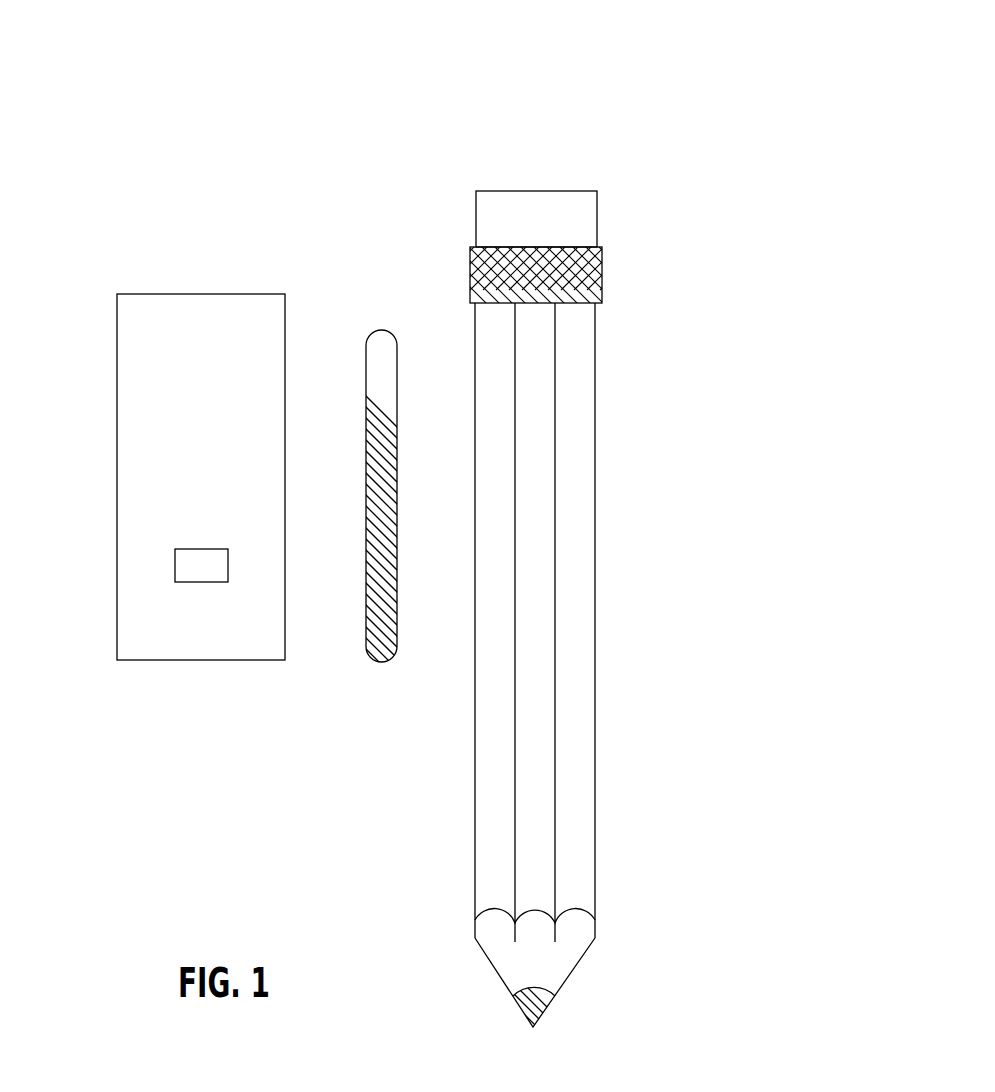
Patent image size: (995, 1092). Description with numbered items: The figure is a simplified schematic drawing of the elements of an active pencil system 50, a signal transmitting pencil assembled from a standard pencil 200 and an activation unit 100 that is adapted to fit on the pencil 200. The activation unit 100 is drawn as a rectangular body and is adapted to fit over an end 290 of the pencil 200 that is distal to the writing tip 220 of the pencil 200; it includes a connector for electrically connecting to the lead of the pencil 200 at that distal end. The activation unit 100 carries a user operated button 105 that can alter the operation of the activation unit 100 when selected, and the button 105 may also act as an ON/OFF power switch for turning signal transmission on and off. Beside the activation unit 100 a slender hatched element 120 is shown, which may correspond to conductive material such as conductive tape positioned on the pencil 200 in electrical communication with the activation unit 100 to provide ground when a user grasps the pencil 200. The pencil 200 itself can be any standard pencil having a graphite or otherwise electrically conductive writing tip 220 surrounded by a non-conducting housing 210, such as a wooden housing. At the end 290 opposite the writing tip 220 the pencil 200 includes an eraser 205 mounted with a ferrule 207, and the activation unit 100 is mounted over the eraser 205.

The system 50 is at (353, 98).
The activation unit 100 is at (159, 256).
The button 105 is at (200, 549).
The stylus 120 is at (383, 328).
The pencil 200 is at (698, 376).
The end 290 is at (521, 150).
The eraser 205 is at (597, 222).
The ferrule 207 is at (602, 268).
The housing 210 is at (597, 570).
The writing tip 220 is at (540, 1019).